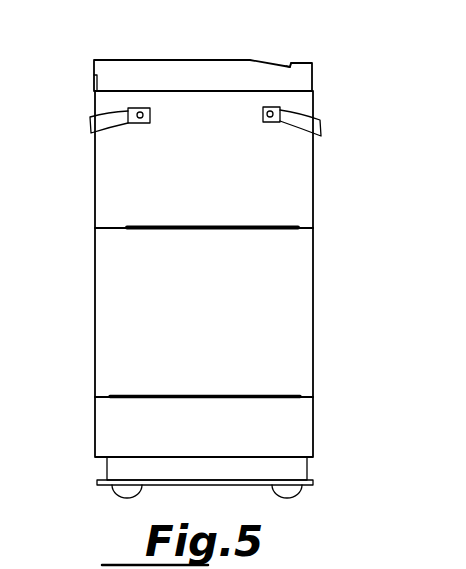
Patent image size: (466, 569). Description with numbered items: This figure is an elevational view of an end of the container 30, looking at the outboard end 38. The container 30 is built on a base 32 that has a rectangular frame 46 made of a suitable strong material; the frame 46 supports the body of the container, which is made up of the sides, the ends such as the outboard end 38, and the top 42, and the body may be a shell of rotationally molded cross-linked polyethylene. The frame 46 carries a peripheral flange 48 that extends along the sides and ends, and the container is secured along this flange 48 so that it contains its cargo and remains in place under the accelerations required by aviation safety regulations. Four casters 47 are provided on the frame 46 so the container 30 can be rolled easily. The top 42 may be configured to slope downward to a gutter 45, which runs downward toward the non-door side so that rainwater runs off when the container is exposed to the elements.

The container 30 is at (188, 270).
The base 32 is at (195, 478).
The outboard end 38 is at (265, 330).
The top 42 is at (173, 61).
The gutter 45 is at (277, 66).
The rectangular frame 46 is at (192, 470).
The casters 47 is at (97, 497).
The flange 48 is at (100, 485).